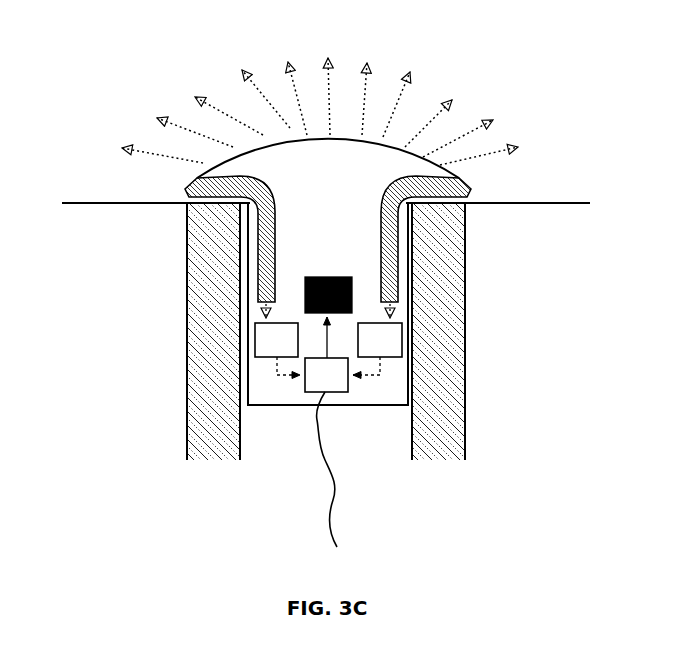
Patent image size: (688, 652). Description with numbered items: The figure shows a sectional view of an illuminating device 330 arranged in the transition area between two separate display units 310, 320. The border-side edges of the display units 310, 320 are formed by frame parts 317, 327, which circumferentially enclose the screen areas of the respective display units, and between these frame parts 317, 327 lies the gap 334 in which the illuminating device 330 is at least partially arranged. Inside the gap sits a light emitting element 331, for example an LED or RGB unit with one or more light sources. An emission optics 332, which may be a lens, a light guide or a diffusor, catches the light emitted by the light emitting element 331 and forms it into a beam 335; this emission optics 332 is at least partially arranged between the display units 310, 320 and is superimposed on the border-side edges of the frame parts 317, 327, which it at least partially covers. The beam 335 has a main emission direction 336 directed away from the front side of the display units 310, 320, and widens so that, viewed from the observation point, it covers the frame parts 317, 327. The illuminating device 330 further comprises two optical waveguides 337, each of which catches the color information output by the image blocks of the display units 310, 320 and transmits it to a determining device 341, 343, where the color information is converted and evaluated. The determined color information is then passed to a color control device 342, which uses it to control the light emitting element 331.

The display unit 310 is at (124, 248).
The display unit 320 is at (527, 248).
The frame part 317 is at (218, 331).
The frame part 327 is at (435, 331).
The illuminating device 330 is at (387, 160).
The light emitting element 331 is at (328, 285).
The emission optics 332 is at (328, 304).
The gap 334 is at (352, 445).
The beam 335 is at (156, 118).
The main emission direction 336 is at (330, 90).
The optical waveguide 337 is at (182, 190).
The determining device 341 is at (277, 339).
The color control device 342 is at (326, 354).
The determining device 343 is at (377, 339).